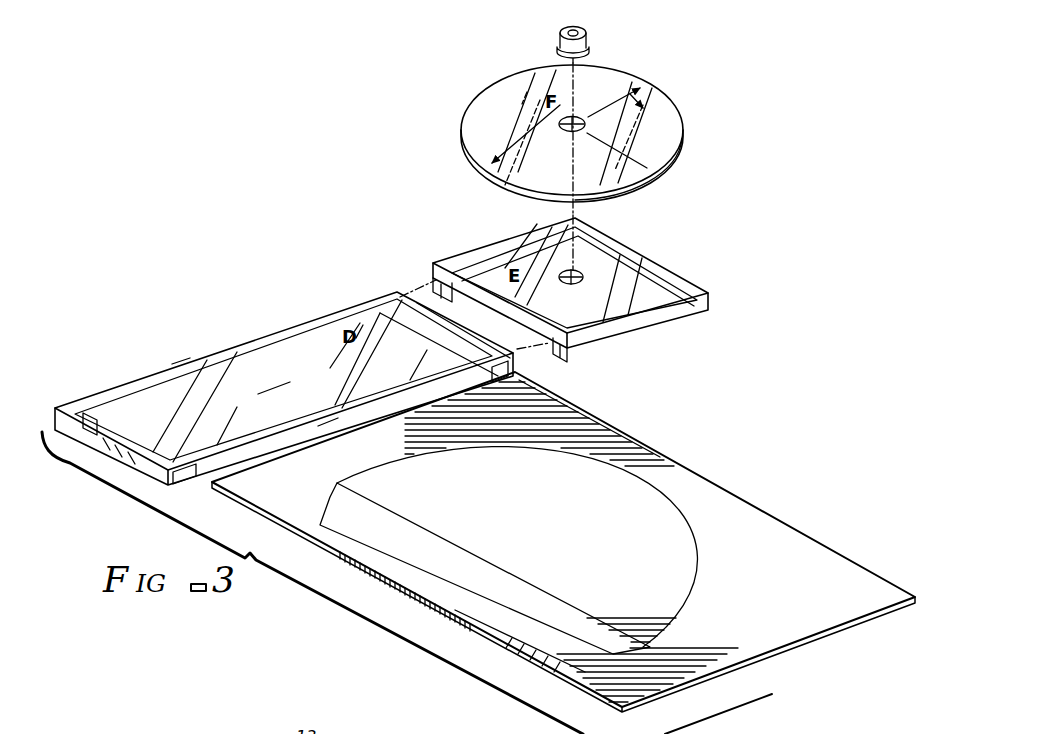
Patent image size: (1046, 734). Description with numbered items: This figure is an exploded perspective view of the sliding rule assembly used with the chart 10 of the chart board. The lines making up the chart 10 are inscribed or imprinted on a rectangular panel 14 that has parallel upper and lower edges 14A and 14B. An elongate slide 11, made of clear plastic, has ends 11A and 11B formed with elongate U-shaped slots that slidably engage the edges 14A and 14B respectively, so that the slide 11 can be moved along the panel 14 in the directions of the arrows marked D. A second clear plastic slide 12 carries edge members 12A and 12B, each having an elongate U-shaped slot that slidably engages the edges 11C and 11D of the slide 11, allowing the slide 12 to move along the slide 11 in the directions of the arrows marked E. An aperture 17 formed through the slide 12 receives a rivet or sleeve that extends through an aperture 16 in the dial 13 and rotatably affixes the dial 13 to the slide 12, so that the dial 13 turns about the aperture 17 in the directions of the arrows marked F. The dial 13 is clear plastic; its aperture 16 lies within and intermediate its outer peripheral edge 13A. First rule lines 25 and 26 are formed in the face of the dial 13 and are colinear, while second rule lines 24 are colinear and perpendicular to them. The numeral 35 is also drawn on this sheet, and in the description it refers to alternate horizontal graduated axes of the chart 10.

The chart 10 is at (688, 560).
The elongate slide 11 is at (215, 343).
The end of slide 11A is at (500, 380).
The end of slide 11B is at (96, 428).
The edge of slide 11C is at (184, 359).
The edge of slide 11D is at (321, 427).
The slide 12 is at (690, 254).
The edge member 12A is at (433, 276).
The edge member 12B is at (617, 339).
The dial 13 is at (699, 125).
The outer peripheral edge 13A is at (678, 159).
The rectangular panel 14 is at (588, 37).
The upper edge 14A is at (655, 450).
The lower edge 14B is at (350, 560).
The aperture 16 is at (585, 123).
The aperture 17 is at (585, 279).
The second rule lines 24 is at (497, 109).
The first rule line 25 is at (637, 90).
The first rule line 26 is at (538, 132).
The frame opening 35 is at (256, 394).